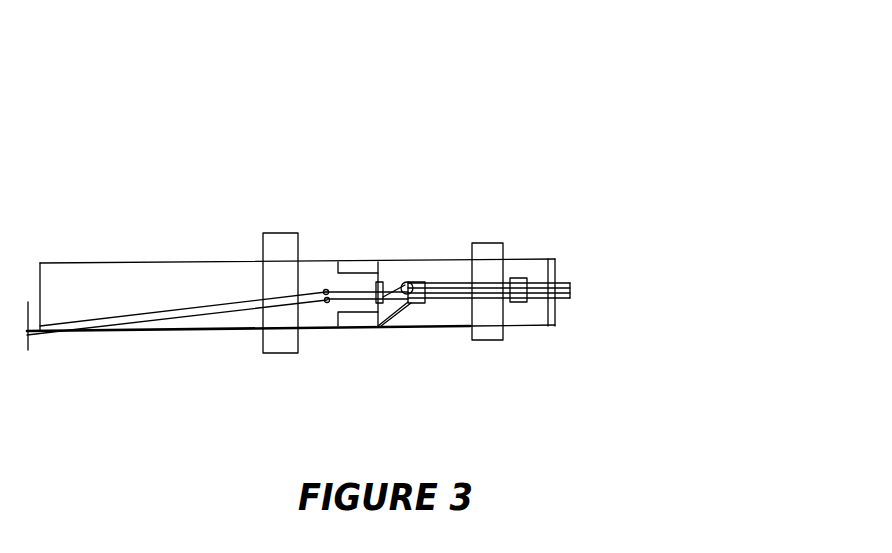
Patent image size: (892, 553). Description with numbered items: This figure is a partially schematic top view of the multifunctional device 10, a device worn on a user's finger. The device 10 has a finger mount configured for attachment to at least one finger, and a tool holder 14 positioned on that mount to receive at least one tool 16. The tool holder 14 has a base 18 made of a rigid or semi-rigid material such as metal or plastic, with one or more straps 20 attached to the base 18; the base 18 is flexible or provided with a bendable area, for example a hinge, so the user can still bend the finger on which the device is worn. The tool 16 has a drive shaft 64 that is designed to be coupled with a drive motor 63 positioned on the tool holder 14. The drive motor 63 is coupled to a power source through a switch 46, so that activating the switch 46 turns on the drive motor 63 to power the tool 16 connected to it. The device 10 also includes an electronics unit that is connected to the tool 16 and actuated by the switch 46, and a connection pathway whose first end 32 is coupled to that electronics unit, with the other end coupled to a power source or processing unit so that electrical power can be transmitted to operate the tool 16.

The multifunctional device 10 is at (547, 188).
The tool holder 14 is at (515, 280).
The tool 16 is at (462, 258).
The base 18 is at (430, 328).
The strap 20 is at (415, 278).
The first end 32 is at (410, 278).
The switch 46 is at (325, 291).
The drive motor 63 is at (405, 281).
The drive shaft 64 is at (407, 283).